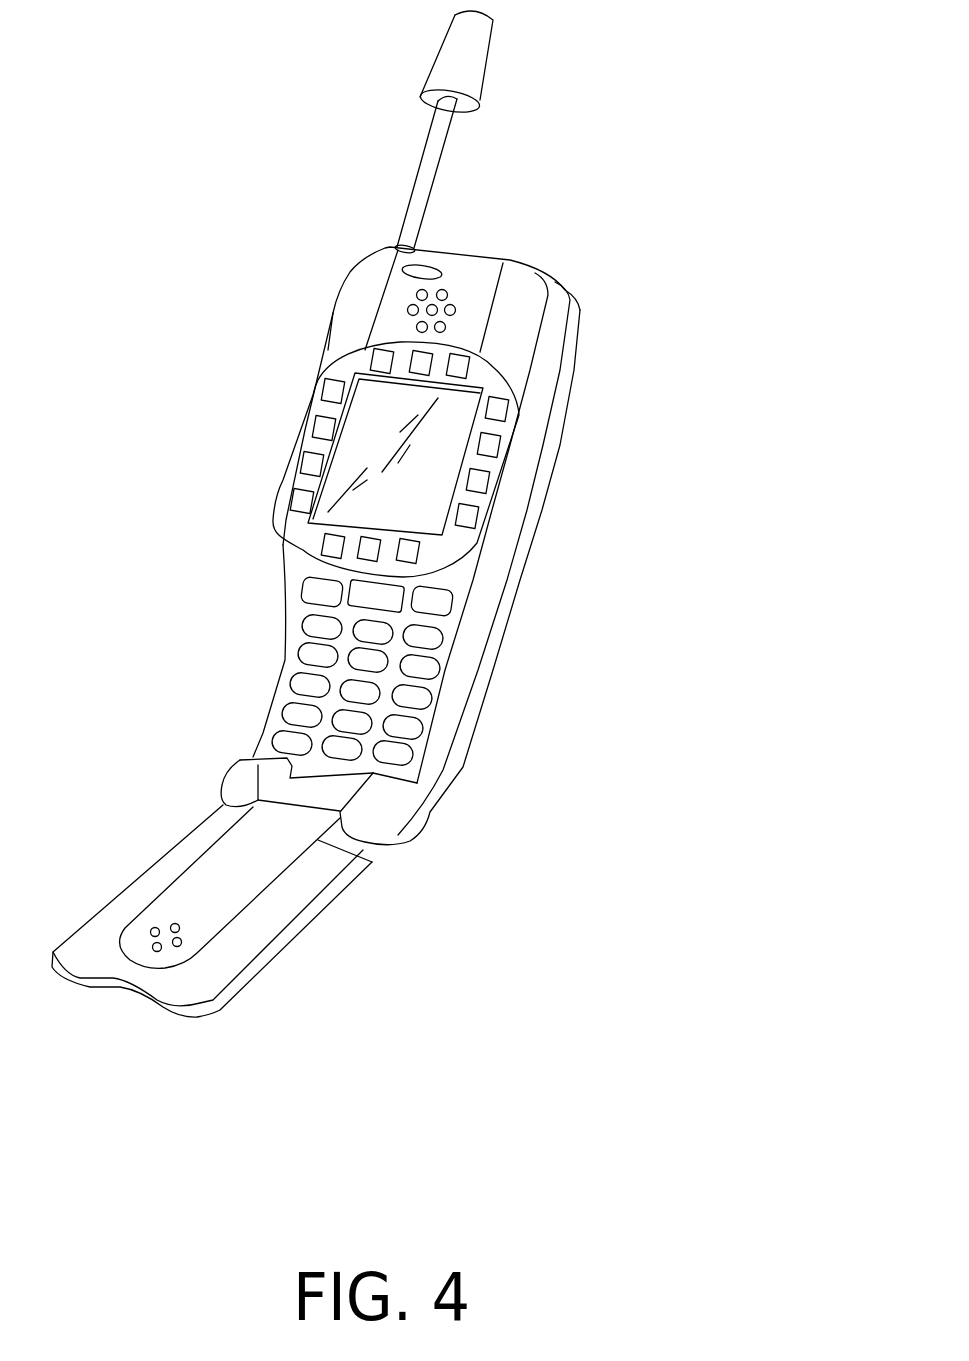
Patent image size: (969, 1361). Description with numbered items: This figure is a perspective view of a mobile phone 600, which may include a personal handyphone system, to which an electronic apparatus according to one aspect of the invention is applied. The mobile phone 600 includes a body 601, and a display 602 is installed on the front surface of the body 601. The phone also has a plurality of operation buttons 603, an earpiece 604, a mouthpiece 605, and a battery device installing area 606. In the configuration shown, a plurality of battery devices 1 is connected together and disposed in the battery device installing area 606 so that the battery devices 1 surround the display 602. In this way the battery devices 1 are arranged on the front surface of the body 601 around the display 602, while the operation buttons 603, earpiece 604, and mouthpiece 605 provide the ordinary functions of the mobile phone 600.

The mobile phone 600 is at (582, 248).
The body 601 is at (522, 458).
The display 602 is at (370, 413).
The operation buttons 603 is at (427, 668).
The earpiece 604 is at (415, 310).
The mouthpiece 605 is at (155, 927).
The battery device installing area 606 is at (497, 359).
The battery device 1 is at (414, 553).